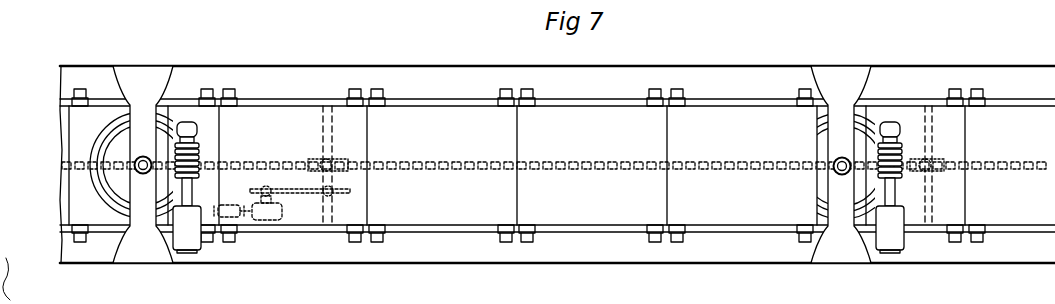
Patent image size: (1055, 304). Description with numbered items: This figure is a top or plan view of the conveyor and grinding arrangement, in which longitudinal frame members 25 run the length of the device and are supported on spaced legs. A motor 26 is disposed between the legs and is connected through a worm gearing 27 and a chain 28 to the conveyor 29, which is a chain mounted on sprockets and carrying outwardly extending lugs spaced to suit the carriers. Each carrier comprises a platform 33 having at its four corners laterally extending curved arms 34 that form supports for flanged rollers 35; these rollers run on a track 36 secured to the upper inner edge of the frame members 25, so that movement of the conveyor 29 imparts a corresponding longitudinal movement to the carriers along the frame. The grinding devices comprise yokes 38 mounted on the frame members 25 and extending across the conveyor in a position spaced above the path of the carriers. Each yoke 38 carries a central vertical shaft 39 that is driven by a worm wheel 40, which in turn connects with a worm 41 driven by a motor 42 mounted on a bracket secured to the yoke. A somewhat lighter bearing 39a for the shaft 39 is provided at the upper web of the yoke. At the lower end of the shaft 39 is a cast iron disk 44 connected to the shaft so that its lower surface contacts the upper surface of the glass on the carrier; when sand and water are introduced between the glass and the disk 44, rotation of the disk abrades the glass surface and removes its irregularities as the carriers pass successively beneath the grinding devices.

The longitudinal frame members 25 is at (529, 183).
The motor 26 is at (236, 216).
The worm gearing 27 is at (272, 218).
The chain 28 is at (294, 196).
The conveyor 29 is at (266, 158).
The platform 33 is at (566, 165).
The laterally extending curved arms 34 is at (384, 103).
The rollers 35 is at (533, 93).
The track 36 is at (316, 99).
The yokes 38 is at (492, 164).
The central vertical shaft 39 is at (141, 156).
The bearing 39a is at (836, 170).
The worm wheel 40 is at (116, 155).
The worm 41 is at (201, 158).
The motor 42 is at (538, 229).
The cast iron disk 44 is at (96, 199).